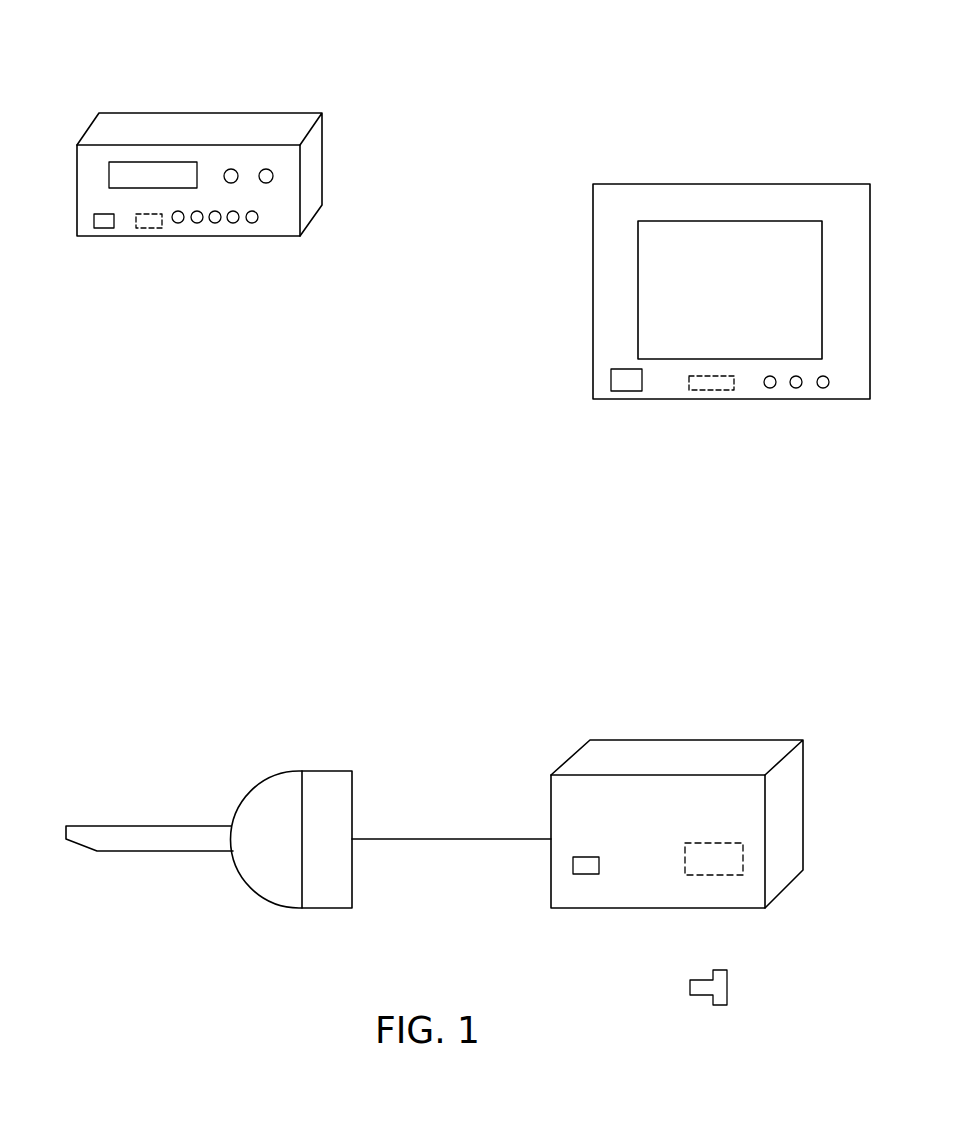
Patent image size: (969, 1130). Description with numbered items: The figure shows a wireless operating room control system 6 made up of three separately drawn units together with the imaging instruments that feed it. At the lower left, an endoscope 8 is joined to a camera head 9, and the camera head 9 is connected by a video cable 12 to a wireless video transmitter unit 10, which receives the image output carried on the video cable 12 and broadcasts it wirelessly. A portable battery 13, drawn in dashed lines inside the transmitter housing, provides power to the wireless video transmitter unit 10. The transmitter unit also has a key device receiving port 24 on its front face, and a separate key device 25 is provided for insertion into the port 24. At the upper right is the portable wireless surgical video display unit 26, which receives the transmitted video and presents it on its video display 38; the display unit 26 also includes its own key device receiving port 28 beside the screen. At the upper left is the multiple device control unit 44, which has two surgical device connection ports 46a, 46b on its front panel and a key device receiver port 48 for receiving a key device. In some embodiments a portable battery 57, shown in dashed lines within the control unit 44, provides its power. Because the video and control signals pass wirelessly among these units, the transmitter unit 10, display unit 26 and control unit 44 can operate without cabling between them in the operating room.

The wireless operating room control system 6 is at (262, 475).
The endoscope 8 is at (253, 785).
The camera head 9 is at (328, 771).
The wireless video transmitter unit 10 is at (692, 738).
The video cable 12 is at (465, 839).
The portable battery 13 is at (747, 853).
The key device receiving port 24 is at (585, 875).
The key device 25 is at (727, 987).
The portable wireless surgical video display unit 26 is at (702, 183).
The key device receiving port 28 is at (611, 380).
The video display 38 is at (767, 221).
The multiple device control unit 44 is at (205, 145).
The surgical device connection port 46a is at (238, 172).
The surgical device connection port 46b is at (273, 176).
The key device receiver port 48 is at (107, 228).
The portable battery 57 is at (150, 229).